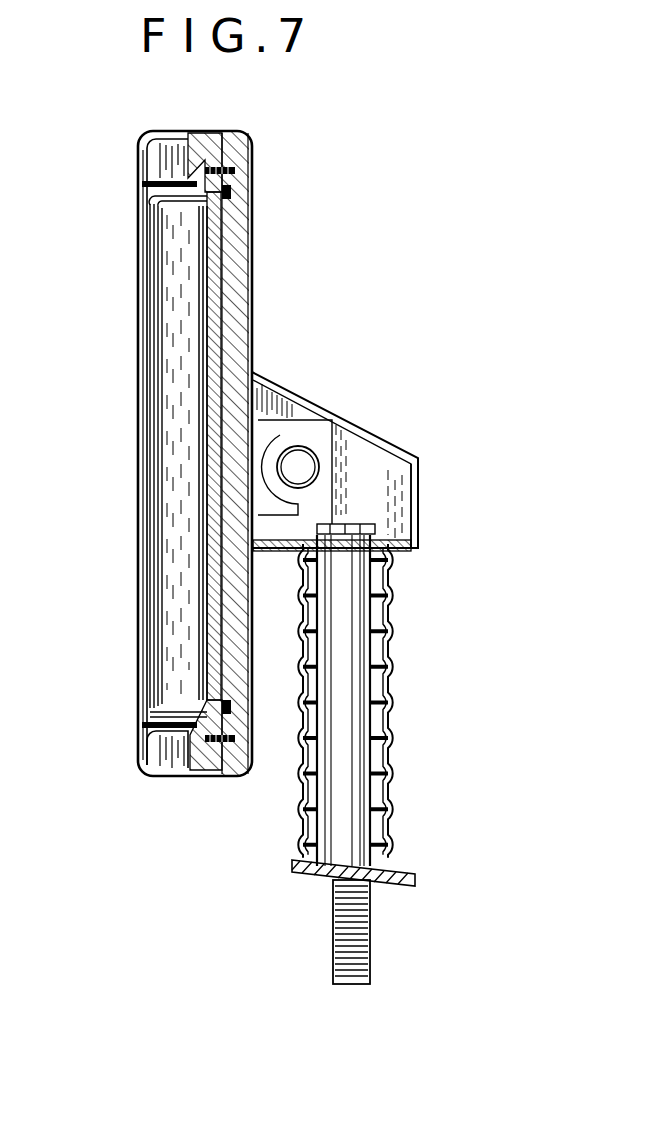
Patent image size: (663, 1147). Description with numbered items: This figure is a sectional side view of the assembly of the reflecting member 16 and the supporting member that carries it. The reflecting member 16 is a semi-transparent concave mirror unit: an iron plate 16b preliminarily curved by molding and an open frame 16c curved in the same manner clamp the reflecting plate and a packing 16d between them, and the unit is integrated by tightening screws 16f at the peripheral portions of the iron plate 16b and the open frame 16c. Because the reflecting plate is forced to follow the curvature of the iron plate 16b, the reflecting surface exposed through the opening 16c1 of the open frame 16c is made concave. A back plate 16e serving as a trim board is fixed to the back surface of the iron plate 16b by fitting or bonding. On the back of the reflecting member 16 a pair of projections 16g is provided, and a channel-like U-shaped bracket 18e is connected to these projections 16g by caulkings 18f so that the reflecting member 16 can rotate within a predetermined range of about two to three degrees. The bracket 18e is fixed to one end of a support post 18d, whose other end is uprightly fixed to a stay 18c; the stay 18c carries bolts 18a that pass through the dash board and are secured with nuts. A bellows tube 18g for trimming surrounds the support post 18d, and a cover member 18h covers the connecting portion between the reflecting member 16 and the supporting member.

The reflecting member 16 is at (210, 343).
The iron plate 16b is at (232, 402).
The open frame 16c is at (155, 778).
The opening 16c1 is at (160, 572).
The packing 16d is at (228, 197).
The back plate 16e is at (247, 262).
The screws 16f is at (238, 171).
The projections 16g is at (262, 418).
The bolts 18a is at (372, 933).
The stay 18c is at (415, 878).
The support post 18d is at (352, 688).
The U-shaped bracket 18e is at (340, 482).
The caulkings 18f is at (299, 467).
The bellows tube 18g is at (406, 628).
The cover member 18h is at (414, 470).